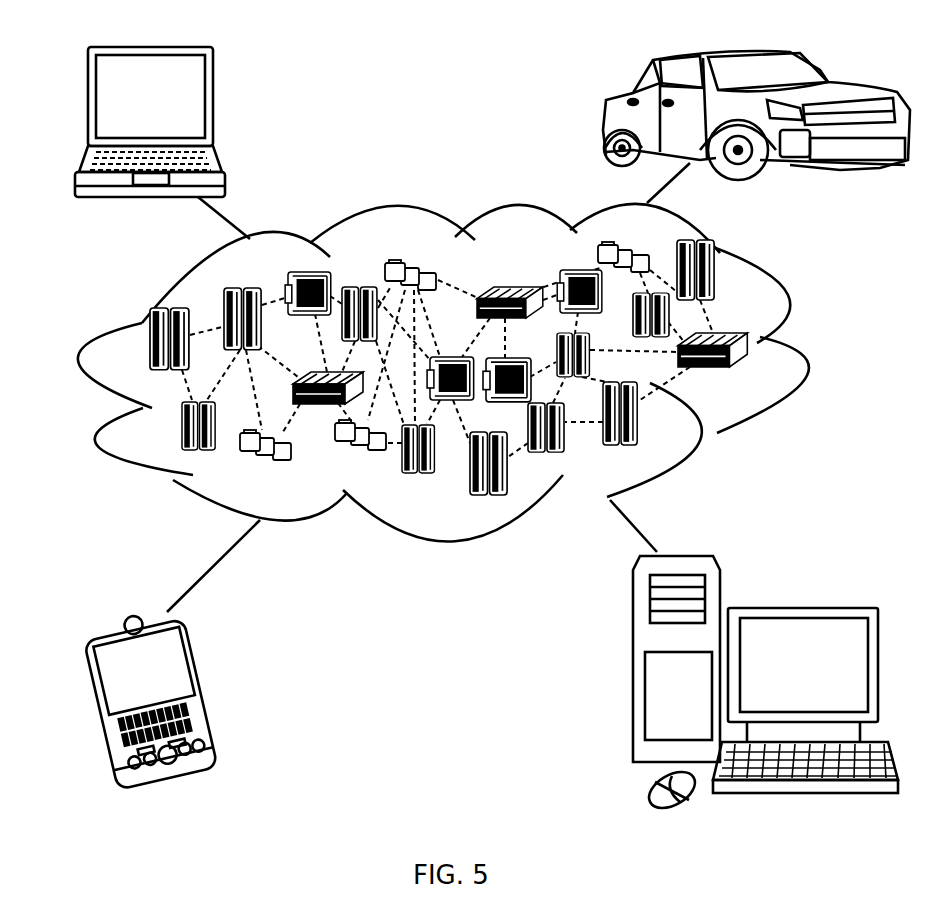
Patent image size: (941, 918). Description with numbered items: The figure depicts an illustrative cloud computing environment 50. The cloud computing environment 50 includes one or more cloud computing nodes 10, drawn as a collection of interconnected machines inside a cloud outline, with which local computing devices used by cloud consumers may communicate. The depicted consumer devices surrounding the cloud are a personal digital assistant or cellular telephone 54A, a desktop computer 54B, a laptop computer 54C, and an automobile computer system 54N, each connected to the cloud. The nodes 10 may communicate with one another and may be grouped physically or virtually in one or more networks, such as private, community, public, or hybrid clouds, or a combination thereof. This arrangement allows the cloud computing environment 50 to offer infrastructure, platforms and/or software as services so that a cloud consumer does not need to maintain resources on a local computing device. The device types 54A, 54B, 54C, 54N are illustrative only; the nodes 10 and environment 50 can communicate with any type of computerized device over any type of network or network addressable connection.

The cloud computing node 10 is at (752, 373).
The cloud computing environment 50 is at (800, 347).
The personal digital assistant or cellular telephone 54A is at (205, 691).
The desktop computer 54B is at (803, 608).
The laptop computer 54C is at (216, 101).
The automobile computer system 54N is at (607, 121).